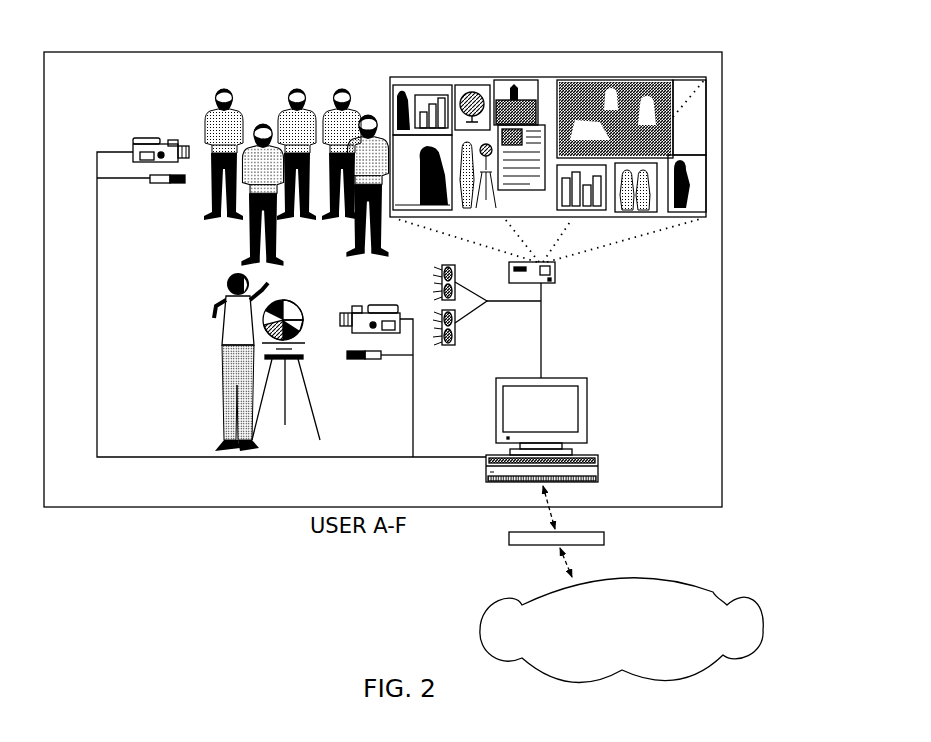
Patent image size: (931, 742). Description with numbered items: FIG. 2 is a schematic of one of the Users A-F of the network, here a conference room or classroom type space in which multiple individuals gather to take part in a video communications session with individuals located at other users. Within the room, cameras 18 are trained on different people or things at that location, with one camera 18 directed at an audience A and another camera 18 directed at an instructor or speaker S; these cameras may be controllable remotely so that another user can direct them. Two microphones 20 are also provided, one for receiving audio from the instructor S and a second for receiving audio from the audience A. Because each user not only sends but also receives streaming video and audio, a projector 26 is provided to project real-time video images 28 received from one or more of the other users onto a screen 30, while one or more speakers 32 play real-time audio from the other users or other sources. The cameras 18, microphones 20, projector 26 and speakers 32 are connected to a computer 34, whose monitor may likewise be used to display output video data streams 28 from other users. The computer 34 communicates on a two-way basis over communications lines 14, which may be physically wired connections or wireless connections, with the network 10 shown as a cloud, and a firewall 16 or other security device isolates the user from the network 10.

The network 10 is at (713, 592).
The communications lines 14 is at (558, 522).
The firewall 16 is at (509, 538).
The camera 18 is at (150, 139).
The microphone 20 is at (150, 177).
The projector 26 is at (555, 278).
The real-time video images 28 is at (470, 87).
The screen 30 is at (706, 136).
The speakers 32 is at (456, 272).
The computer 34 is at (598, 472).
The audience A is at (252, 82).
The instructor S is at (208, 292).